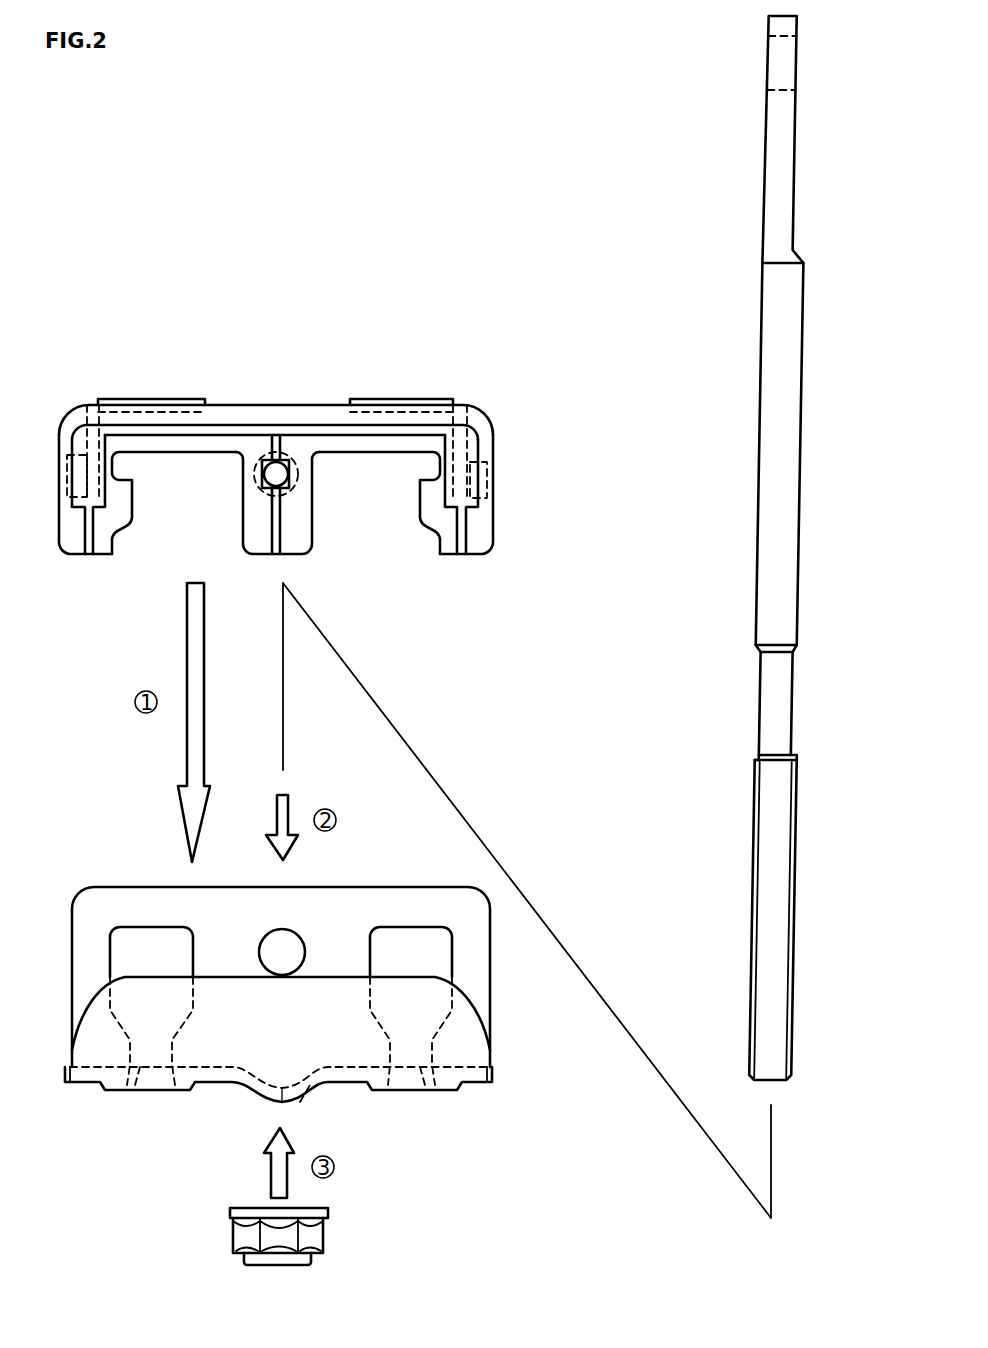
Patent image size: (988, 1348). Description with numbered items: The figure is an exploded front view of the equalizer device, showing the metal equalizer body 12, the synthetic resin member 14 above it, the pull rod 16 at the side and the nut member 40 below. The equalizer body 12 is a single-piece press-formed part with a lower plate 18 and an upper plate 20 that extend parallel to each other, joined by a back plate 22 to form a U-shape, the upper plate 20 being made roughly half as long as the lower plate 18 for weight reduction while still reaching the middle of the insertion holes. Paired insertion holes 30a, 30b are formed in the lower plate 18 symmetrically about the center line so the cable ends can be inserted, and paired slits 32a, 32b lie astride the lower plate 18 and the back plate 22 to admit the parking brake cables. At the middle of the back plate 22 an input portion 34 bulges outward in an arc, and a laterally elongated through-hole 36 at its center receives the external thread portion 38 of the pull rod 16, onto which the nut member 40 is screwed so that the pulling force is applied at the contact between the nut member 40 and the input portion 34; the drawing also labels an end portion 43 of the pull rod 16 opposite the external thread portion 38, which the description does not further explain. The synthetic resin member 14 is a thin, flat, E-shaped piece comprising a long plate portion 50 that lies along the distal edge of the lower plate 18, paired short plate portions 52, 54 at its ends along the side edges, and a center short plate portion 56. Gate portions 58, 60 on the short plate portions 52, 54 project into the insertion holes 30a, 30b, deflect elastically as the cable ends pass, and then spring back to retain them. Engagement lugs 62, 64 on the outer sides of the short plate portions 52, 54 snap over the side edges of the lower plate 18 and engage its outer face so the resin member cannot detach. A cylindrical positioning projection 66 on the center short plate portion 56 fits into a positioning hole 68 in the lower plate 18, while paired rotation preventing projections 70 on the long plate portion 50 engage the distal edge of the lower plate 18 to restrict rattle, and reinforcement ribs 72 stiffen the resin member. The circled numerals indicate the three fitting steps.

The equalizer body 12 is at (482, 1133).
The synthetic resin member 14 is at (460, 362).
The pull rod 16 is at (775, 456).
The lower plate 18 is at (88, 941).
The upper plate 20 is at (98, 1016).
The back plate 22 is at (92, 1083).
The insertion hole 30a is at (137, 928).
The insertion hole 30b is at (408, 928).
The slit 32a is at (145, 1092).
The slit 32b is at (412, 1092).
The input portion 34 is at (282, 1104).
The through-hole 36 is at (303, 1106).
The external thread portion 38 is at (773, 901).
The nut member 40 is at (310, 1240).
The tip portion 43 is at (783, 69).
The long plate portion 50 is at (292, 410).
The short plate portion 52 is at (72, 529).
The short plate portion 54 is at (478, 531).
The center short plate portion 56 is at (300, 520).
The gate portion 58 is at (124, 500).
The gate portion 60 is at (424, 503).
The engagement lug 62 is at (62, 474).
The engagement lug 64 is at (488, 474).
The positioning projection 66 is at (256, 478).
The positioning hole 68 is at (268, 933).
The rotation preventing projection 70 is at (155, 402).
The reinforcement rib 72 is at (236, 430).